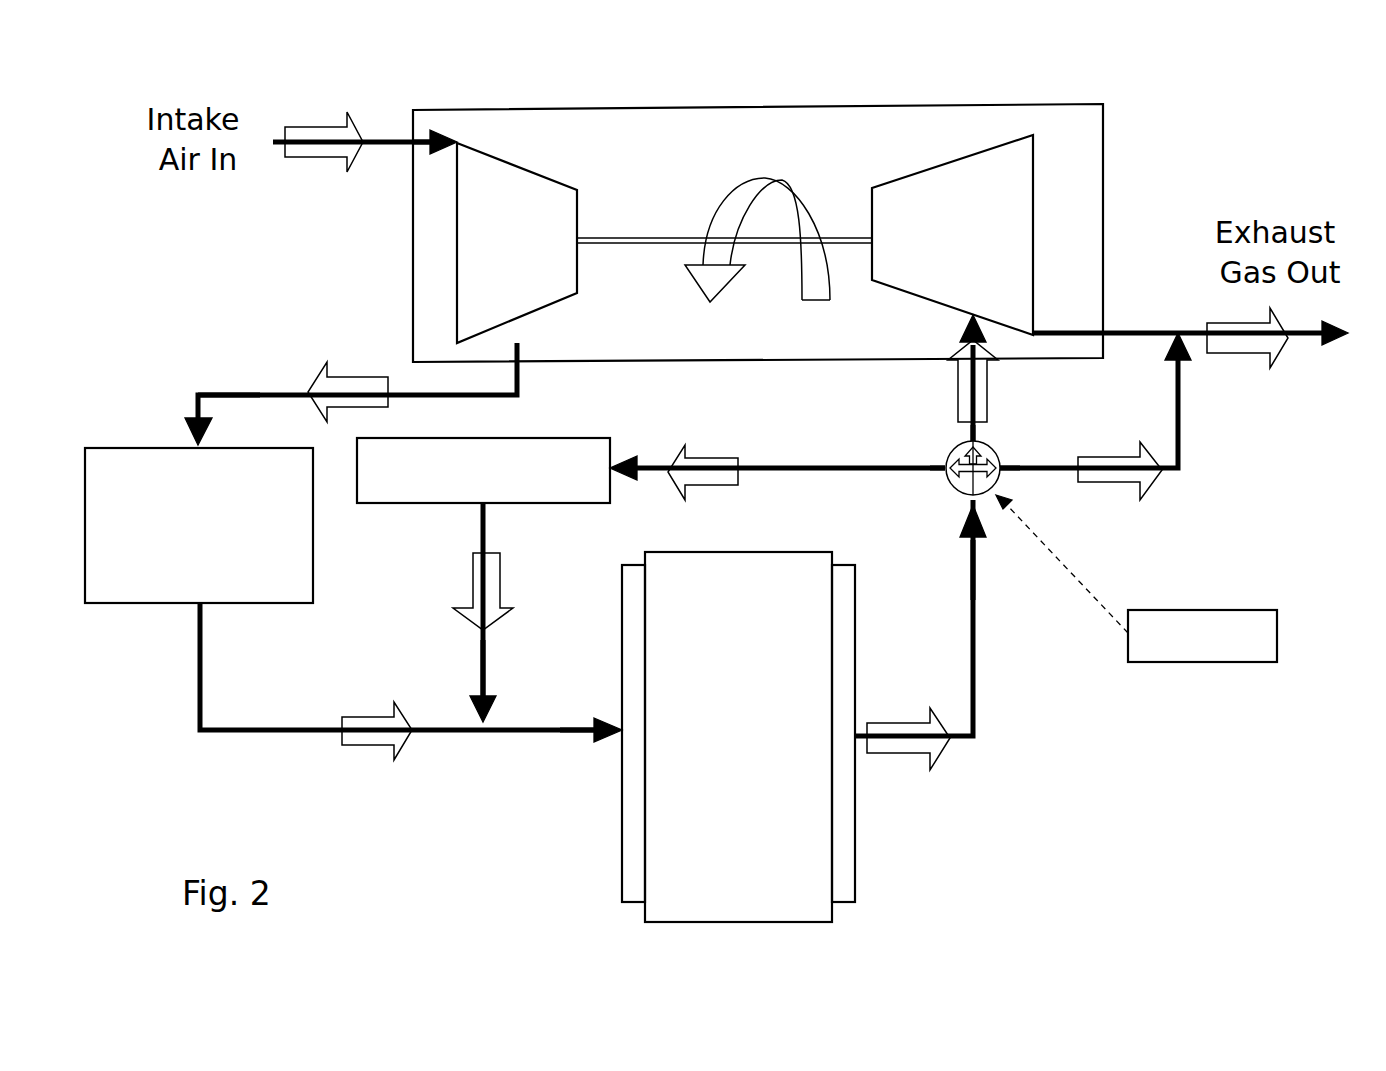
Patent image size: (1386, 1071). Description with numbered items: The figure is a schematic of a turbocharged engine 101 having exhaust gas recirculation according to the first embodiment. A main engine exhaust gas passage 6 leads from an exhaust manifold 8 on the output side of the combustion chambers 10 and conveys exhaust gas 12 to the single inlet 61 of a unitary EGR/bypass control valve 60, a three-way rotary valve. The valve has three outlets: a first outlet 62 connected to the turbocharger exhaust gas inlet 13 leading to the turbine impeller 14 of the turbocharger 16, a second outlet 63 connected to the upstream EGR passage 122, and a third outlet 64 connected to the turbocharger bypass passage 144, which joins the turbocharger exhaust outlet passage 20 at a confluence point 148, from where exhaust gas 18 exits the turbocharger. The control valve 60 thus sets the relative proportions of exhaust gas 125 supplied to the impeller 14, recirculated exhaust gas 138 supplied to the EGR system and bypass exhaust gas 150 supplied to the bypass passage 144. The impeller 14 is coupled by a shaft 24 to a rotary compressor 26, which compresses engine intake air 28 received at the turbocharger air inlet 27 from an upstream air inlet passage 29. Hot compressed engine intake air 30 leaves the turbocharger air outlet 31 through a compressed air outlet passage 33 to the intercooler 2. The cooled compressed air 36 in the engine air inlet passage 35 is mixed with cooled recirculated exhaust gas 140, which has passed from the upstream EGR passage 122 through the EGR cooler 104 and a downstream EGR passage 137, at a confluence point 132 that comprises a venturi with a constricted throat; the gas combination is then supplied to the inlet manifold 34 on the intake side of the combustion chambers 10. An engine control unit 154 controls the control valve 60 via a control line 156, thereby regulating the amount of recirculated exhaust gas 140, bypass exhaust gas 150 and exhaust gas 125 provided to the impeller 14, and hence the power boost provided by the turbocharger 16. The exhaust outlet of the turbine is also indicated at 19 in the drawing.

The intercooler 2 is at (190, 567).
The main engine exhaust gas passage 6 is at (976, 665).
The exhaust manifold 8 is at (856, 792).
The combustion chambers 10 is at (721, 798).
The exhaust gas 12 is at (913, 754).
The turbocharger exhaust gas inlet 13 is at (986, 382).
The turbine impeller 14 is at (936, 255).
The turbocharger 16 is at (1120, 188).
The exhaust gas 18 is at (1250, 358).
The turbine outlet conduit 19 is at (1105, 333).
The turbocharger exhaust outlet passage 20 is at (1313, 348).
The shaft 24 is at (635, 246).
The rotary compressor 26 is at (500, 255).
The turbocharger air inlet 27 is at (412, 145).
The engine intake air 28 is at (333, 158).
The upstream air inlet passage 29 is at (273, 140).
The hot compressed engine intake air 30 is at (365, 363).
The turbocharger air outlet 31 is at (520, 367).
The compressed air outlet passage 33 is at (265, 394).
The inlet manifold 34 is at (620, 783).
The engine air inlet passage 35 is at (197, 692).
The cooled compressed air 36 is at (353, 746).
The EGR/bypass control valve 60 is at (947, 500).
The valve inlet 61 is at (972, 497).
The first valve outlet 62 is at (968, 440).
The second valve outlet 63 is at (946, 480).
The third valve outlet 64 is at (1000, 478).
The turbocharged engine 101 is at (1315, 813).
The EGR cooler 104 is at (483, 470).
The upstream EGR passage 122 is at (818, 465).
The exhaust gas 125 is at (956, 382).
The confluence point 132 is at (480, 725).
The downstream EGR passage 137 is at (484, 663).
The recirculated exhaust gas 138 is at (702, 492).
The cooled recirculated exhaust gas 140 is at (470, 590).
The turbocharger bypass passage 144 is at (1183, 407).
The confluence point 148 is at (1178, 345).
The bypass exhaust gas 150 is at (1113, 490).
The engine control unit 154 is at (1202, 636).
The control line 156 is at (1043, 538).